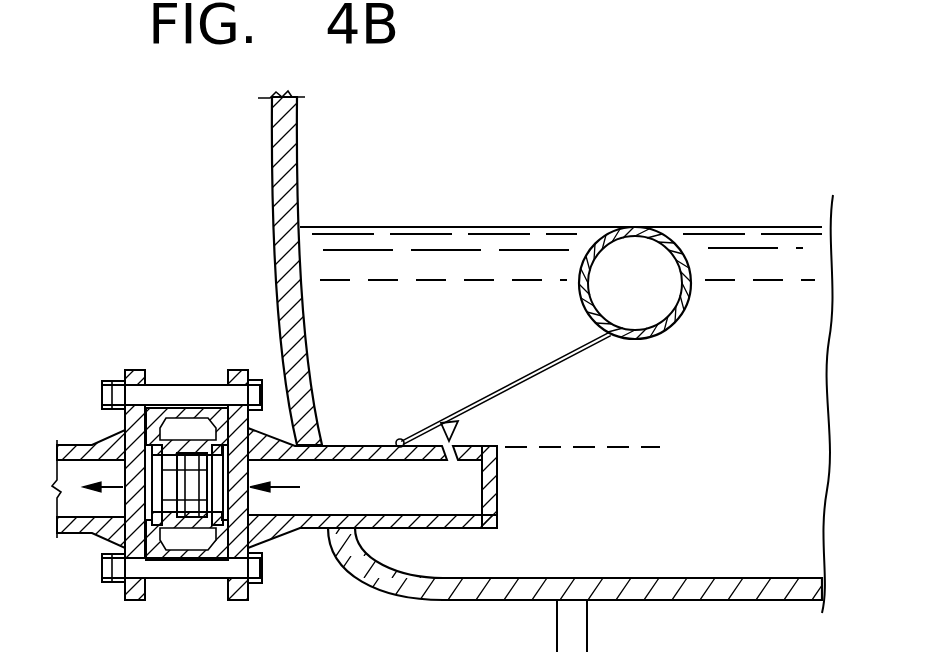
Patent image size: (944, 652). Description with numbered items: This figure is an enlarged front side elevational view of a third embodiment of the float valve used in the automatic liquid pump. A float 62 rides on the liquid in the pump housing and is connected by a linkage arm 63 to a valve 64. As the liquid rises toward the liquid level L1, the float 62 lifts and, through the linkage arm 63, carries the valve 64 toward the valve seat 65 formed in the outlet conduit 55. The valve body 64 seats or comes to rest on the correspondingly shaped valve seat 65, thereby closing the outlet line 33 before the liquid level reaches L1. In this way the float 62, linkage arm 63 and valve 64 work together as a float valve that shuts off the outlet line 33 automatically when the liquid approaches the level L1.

The outlet line 33 is at (72, 505).
The outlet conduit 55 is at (417, 498).
The float 62 is at (615, 299).
The linkage arm 63 is at (480, 403).
The valve 64 is at (454, 431).
The valve seat 65 is at (443, 460).
The liquid level L1 is at (657, 447).